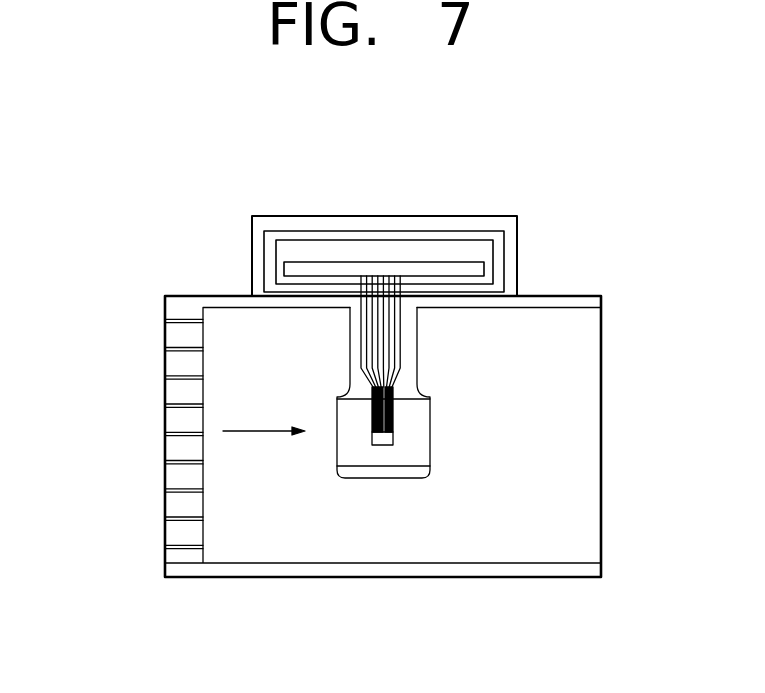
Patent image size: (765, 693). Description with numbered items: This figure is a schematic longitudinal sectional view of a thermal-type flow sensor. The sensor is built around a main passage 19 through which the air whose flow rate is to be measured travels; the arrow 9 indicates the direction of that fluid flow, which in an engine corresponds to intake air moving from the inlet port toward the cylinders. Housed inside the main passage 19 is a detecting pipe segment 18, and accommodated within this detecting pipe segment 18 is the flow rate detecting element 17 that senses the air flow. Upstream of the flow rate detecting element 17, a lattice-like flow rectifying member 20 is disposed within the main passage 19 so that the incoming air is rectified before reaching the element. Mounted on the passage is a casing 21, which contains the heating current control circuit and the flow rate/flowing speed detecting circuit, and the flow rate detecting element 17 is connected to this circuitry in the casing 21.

The arrow 9 is at (261, 431).
The flow rate detecting element 17 is at (382, 447).
The detecting pipe segment 18 is at (422, 478).
The main passage 19 is at (538, 580).
The lattice-like flow rectifying member 20 is at (165, 469).
The casing 21 is at (485, 217).